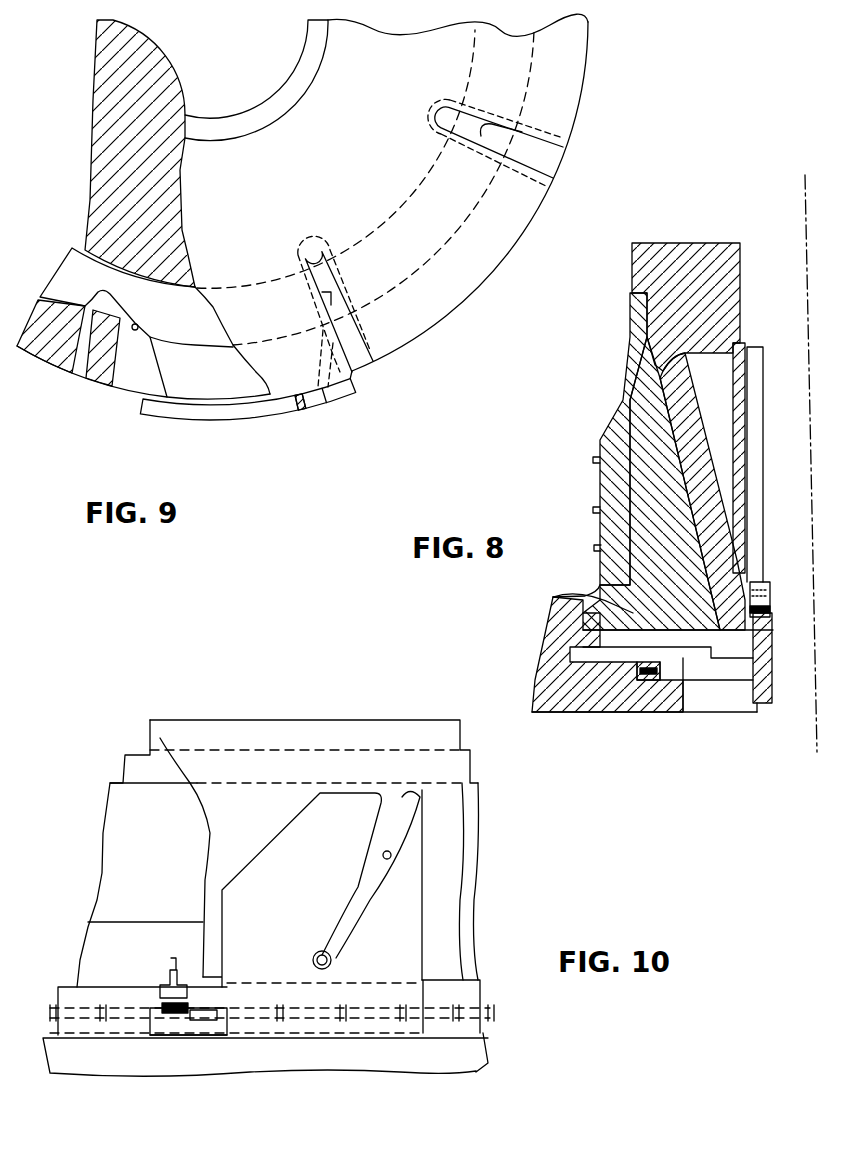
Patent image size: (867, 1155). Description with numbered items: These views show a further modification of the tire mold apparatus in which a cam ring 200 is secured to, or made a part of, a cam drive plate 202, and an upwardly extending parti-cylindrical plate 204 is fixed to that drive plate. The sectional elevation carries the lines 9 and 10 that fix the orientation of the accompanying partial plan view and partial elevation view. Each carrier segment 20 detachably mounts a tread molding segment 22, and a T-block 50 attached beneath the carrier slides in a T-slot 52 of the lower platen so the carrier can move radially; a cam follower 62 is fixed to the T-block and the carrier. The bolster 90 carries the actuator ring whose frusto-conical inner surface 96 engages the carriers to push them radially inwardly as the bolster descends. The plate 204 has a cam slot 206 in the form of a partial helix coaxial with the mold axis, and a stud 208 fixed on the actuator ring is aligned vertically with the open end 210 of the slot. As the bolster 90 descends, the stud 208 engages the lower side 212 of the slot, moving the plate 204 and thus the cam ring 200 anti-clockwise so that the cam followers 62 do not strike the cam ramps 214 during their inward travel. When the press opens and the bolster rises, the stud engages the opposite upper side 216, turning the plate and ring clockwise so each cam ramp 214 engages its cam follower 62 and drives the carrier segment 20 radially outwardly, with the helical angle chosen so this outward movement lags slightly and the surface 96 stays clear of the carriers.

In FIG. 8, the carrier segment 20 is at (648, 565).
In FIG. 10, the carrier segment 20 is at (113, 873).
In FIG. 8, the tread molding segment 22 is at (602, 528).
In FIG. 8, the T-block 50 is at (700, 640).
In FIG. 8, the T-slot 52 is at (745, 653).
In FIG. 8, the cam follower 62 is at (583, 612).
In FIG. 10, the cam follower 62 is at (170, 1017).
In FIG. 8, the bolster 90 is at (673, 252).
In FIG. 10, the bolster 90 is at (160, 740).
In FIG. 8, the radially inner surface of the segment actuator ring 96 is at (693, 508).
In FIG. 9, the cam ring 200 is at (63, 273).
In FIG. 8, the cam ring 200 is at (627, 668).
In FIG. 10, the cam ring 200 is at (203, 1010).
In FIG. 9, the cam drive plate 202 is at (213, 388).
In FIG. 8, the cam drive plate 202 is at (660, 693).
In FIG. 10, the cam drive plate 202 is at (212, 1027).
In FIG. 9, the parti-cylindrical plate 204 is at (340, 393).
In FIG. 10, the parti-cylindrical plate 204 is at (300, 828).
In FIG. 9, the cam slot 206 is at (298, 403).
In FIG. 10, the cam slot 206 is at (385, 833).
In FIG. 8, the stud 208 is at (750, 598).
In FIG. 10, the stud 208 is at (316, 953).
In FIG. 10, the open end of the slot 210 is at (392, 797).
In FIG. 10, the lower side of the slot 212 is at (391, 855).
In FIG. 9, the cam ramp 214 is at (508, 108).
In FIG. 10, the upper side of the slot 216 is at (357, 885).
In FIG. 8, the section lines 9— 9 is at (747, 330).
In FIG. 8, the section lines 10— 10 is at (803, 175).